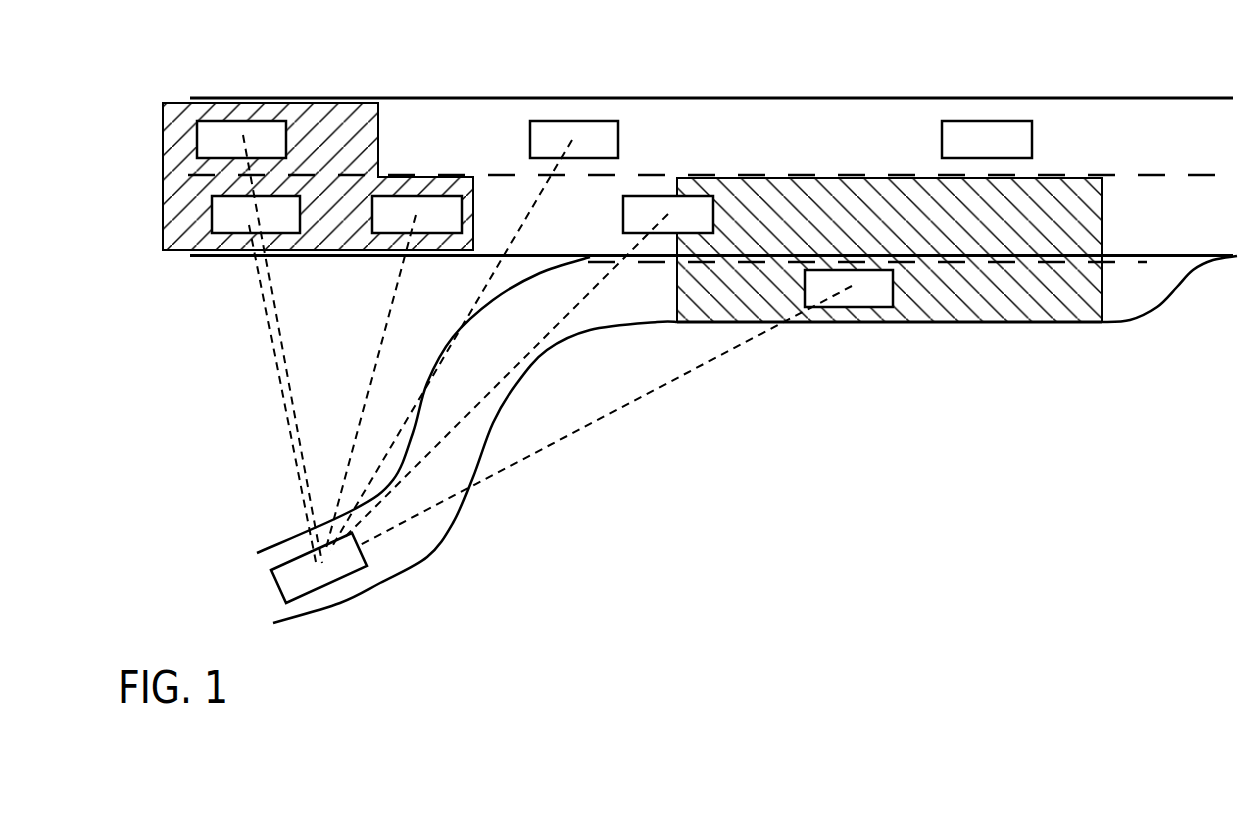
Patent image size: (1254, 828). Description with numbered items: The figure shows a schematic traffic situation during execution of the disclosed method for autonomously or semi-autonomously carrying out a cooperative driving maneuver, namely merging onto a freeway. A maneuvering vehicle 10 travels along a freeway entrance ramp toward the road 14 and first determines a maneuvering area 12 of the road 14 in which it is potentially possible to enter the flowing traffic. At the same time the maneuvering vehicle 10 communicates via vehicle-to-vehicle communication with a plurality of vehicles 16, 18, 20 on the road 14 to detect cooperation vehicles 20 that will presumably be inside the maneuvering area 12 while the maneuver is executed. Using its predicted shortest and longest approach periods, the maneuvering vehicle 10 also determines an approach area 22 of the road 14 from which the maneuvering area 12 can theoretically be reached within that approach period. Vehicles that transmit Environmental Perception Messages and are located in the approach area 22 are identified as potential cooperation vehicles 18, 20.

The maneuvering vehicle 10 is at (336, 580).
The maneuvering area 12 is at (1018, 307).
The road 14 is at (827, 121).
The vehicles 16 is at (596, 122).
The potential cooperation vehicle 18 is at (221, 122).
The cooperation vehicles 20 is at (231, 232).
The approach area 22 is at (359, 122).